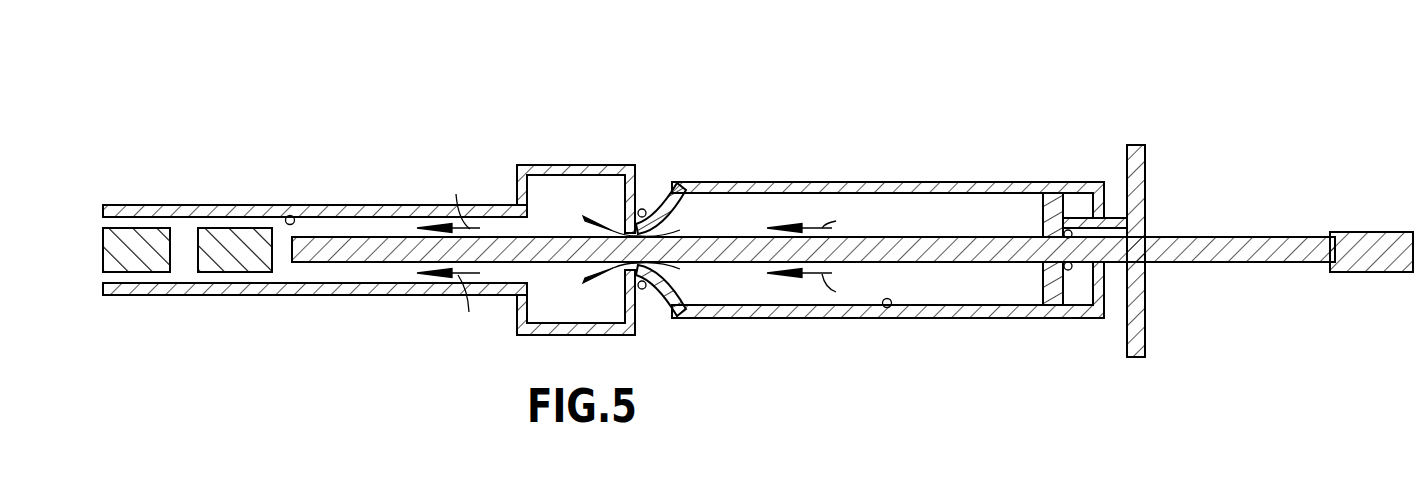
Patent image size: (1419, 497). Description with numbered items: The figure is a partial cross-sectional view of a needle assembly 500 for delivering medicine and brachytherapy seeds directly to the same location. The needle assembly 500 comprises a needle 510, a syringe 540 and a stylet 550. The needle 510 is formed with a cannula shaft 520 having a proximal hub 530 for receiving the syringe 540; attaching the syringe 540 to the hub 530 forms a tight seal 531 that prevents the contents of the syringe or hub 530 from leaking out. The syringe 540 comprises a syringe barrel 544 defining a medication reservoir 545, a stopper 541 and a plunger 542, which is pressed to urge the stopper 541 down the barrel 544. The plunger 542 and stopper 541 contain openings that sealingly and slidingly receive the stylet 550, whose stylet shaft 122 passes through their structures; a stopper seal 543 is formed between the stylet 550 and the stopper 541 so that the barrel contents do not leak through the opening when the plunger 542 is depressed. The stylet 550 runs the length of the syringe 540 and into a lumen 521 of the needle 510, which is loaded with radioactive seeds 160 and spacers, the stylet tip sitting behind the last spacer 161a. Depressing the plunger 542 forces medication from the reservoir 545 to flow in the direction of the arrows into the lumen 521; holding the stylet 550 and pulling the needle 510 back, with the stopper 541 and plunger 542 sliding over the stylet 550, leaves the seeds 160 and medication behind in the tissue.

The needle assembly 500 is at (792, 127).
The needle 510 is at (392, 165).
The cannula shaft 520 is at (205, 205).
The lumen 521 is at (291, 215).
The brachytherapy seeds 160 is at (142, 273).
The last spacer 161a is at (225, 273).
The stylet shaft 122 is at (883, 237).
The hub 530 is at (553, 155).
The seal 531 is at (647, 207).
The syringe 540 is at (762, 320).
The stopper 541 is at (1043, 203).
The plunger 542 is at (1128, 144).
The stopper seal 543 is at (1068, 270).
The syringe barrel 544 is at (895, 318).
The medication reservoir 545 is at (958, 290).
The stylet 550 is at (1210, 275).